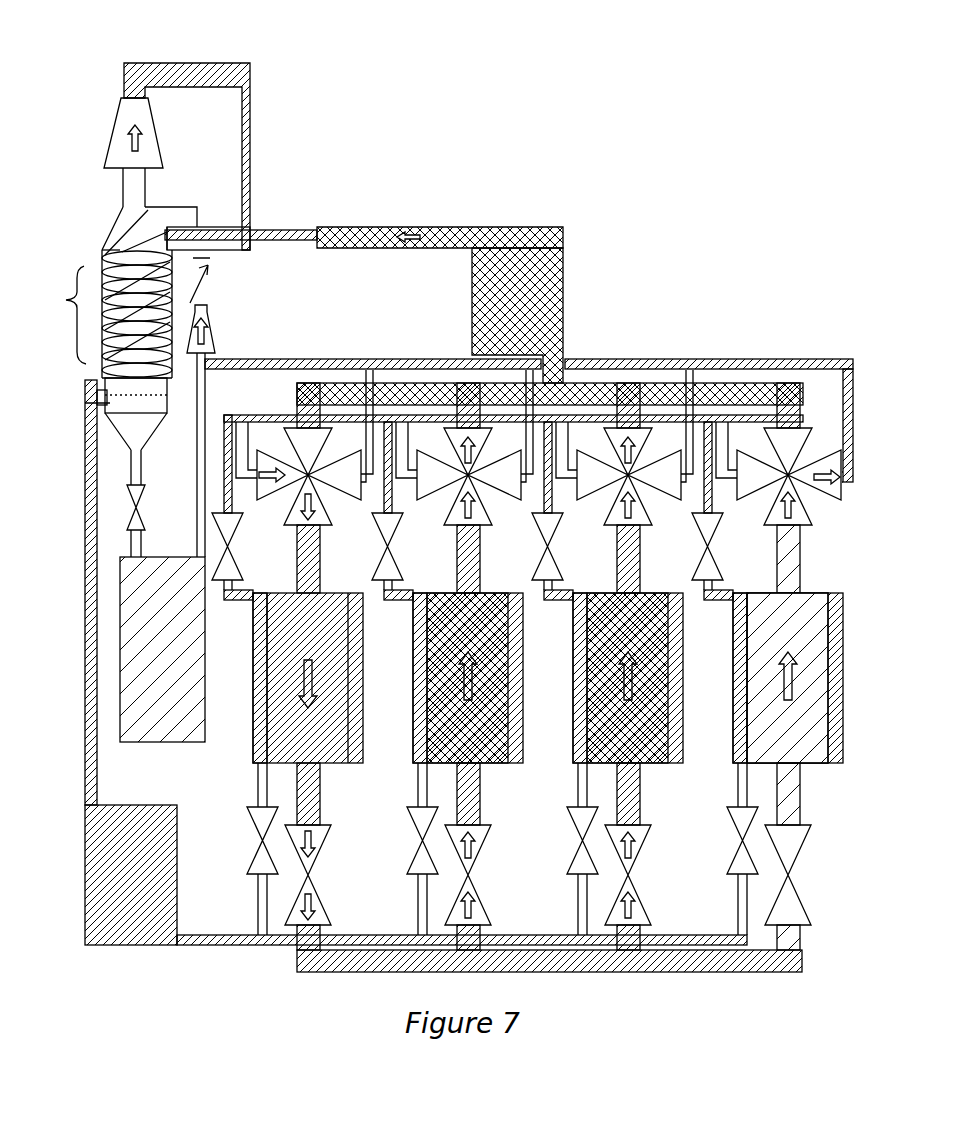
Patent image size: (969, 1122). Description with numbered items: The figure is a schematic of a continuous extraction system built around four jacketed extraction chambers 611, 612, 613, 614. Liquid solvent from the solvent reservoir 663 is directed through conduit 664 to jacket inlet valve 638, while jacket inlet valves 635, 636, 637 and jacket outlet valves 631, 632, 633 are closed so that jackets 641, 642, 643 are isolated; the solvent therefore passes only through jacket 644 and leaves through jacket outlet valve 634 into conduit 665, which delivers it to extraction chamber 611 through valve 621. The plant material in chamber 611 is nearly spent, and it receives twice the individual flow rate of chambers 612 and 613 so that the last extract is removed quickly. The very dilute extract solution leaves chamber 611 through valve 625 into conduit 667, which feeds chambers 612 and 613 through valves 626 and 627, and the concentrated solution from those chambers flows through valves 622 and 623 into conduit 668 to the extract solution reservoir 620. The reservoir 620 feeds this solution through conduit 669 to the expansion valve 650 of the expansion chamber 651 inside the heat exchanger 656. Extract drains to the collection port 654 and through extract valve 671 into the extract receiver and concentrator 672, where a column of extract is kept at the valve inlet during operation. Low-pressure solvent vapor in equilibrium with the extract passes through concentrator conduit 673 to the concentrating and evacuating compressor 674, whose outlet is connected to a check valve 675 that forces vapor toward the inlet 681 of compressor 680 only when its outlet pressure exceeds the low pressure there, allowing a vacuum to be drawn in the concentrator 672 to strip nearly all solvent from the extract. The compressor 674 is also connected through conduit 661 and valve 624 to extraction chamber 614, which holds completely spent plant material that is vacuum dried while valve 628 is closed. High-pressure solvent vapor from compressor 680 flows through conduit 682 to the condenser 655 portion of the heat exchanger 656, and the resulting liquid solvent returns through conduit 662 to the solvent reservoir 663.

The jacketed extraction chamber 611 is at (352, 608).
The jacketed extraction chamber 612 is at (512, 608).
The jacketed extraction chamber 613 is at (672, 608).
The jacketed extraction chamber 614 is at (830, 608).
The extract solution reservoir 620 is at (565, 333).
The valve 621 is at (318, 505).
The valve 622 is at (478, 505).
The valve 623 is at (638, 505).
The valve 624 is at (798, 505).
The valve 625 is at (327, 835).
The valve 626 is at (478, 835).
The valve 627 is at (638, 835).
The valve 628 is at (787, 832).
The jacket outlet valve 631 is at (235, 522).
The jacket outlet valve 632 is at (395, 522).
The jacket outlet valve 633 is at (555, 522).
The jacket outlet valve 634 is at (715, 522).
The jacket inlet valve 635 is at (257, 865).
The jacket inlet valve 636 is at (417, 860).
The jacket inlet valve 637 is at (577, 860).
The jacket inlet valve 638 is at (737, 860).
The jacket 641 is at (255, 715).
The jacket 642 is at (415, 715).
The jacket 643 is at (575, 715).
The jacket 644 is at (737, 715).
The expansion valve 650 is at (167, 233).
The expansion chamber 651 is at (107, 250).
The collection port 654 is at (92, 405).
The condenser 655 is at (108, 265).
The heat exchanger 656 is at (52, 315).
The conduit 661 is at (690, 362).
The conduit 662 is at (85, 695).
The solvent reservoir 663 is at (178, 872).
The conduit 664 is at (200, 942).
The conduit 665 is at (228, 413).
The conduit 667 is at (802, 965).
The conduit 668 is at (446, 383).
The conduit 669 is at (325, 228).
The extract valve 671 is at (142, 497).
The extract receiver and concentrator 672 is at (193, 628).
The concentrator conduit 673 is at (198, 437).
The concentrating and evacuating compressor 674 is at (247, 330).
The check valve 675 is at (228, 280).
The compressor 680 is at (113, 153).
The inlet 681 is at (133, 190).
The conduit 682 is at (238, 67).